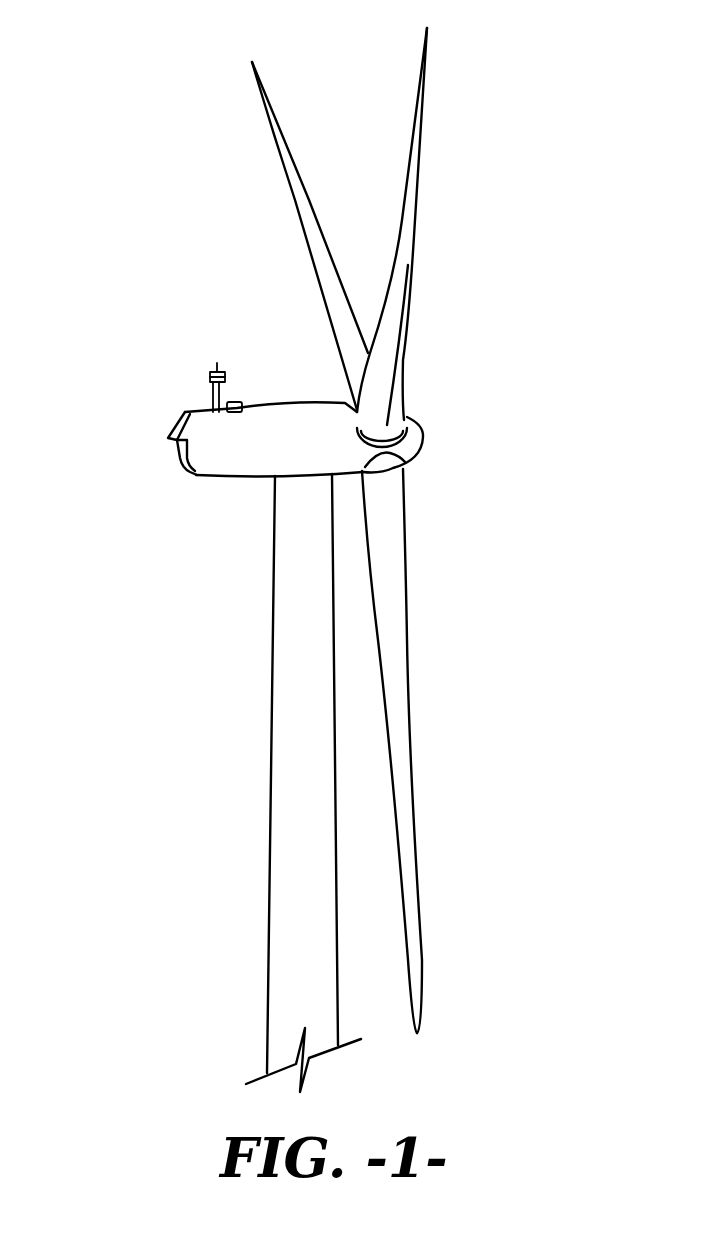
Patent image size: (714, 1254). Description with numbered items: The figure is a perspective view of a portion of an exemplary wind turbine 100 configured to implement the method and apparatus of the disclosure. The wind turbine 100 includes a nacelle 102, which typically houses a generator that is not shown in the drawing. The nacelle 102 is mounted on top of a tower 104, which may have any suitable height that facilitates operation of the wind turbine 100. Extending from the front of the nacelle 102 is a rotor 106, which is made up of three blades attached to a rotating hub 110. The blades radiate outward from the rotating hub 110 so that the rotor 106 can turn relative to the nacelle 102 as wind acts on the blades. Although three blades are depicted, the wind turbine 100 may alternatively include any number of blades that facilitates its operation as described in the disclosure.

The wind turbine 100 is at (146, 184).
The nacelle 102 is at (232, 476).
The tower 104 is at (268, 843).
The rotor 106 is at (529, 318).
The rotating hub 110 is at (423, 432).